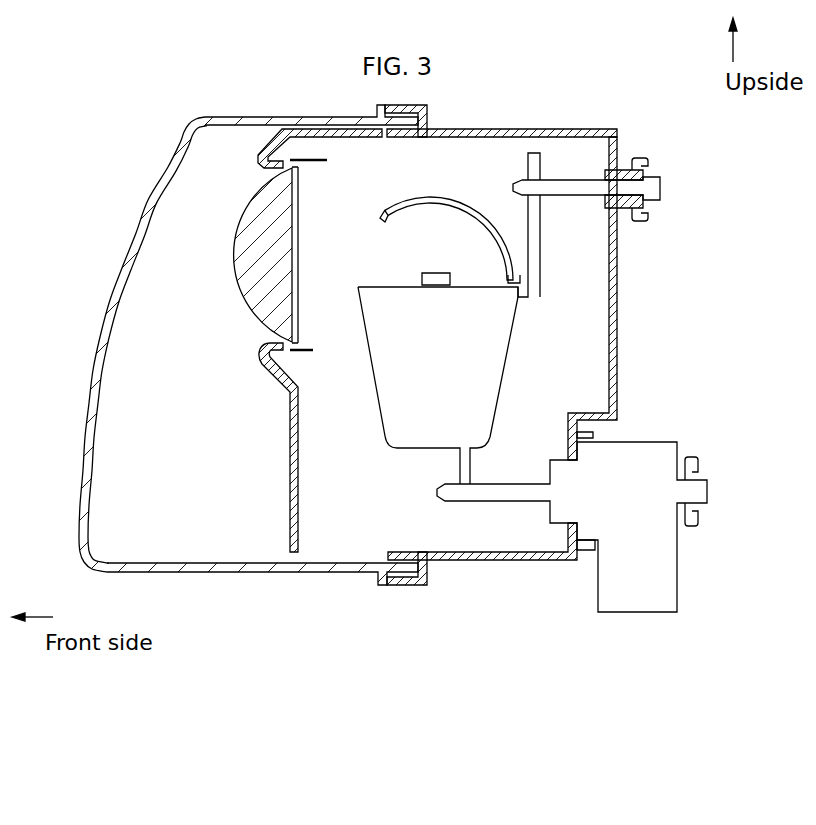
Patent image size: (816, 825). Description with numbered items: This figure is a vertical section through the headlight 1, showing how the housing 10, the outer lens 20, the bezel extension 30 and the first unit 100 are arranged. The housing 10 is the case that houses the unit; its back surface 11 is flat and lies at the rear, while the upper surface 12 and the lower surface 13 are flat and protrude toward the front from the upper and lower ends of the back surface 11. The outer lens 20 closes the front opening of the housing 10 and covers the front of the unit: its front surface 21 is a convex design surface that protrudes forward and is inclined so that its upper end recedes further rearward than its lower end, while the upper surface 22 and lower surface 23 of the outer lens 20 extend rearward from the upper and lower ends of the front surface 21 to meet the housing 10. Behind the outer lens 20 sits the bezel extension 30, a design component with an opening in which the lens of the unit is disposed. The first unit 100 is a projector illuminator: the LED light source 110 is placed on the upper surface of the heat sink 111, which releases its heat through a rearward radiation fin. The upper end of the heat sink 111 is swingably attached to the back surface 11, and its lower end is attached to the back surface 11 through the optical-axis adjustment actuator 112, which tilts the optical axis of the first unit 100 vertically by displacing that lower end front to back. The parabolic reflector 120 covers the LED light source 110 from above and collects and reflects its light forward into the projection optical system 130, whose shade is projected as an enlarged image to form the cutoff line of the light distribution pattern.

The headlight 1 is at (115, 118).
The housing 10 is at (612, 118).
The back surface 11 is at (615, 383).
The upper surface 12 is at (552, 130).
The lower surface 13 is at (538, 557).
The outer lens 20 is at (163, 127).
The front surface 21 is at (153, 202).
The upper surface 22 is at (273, 117).
The lower surface 23 is at (225, 571).
The bezel extension 30 is at (265, 358).
The first unit 100 is at (217, 220).
The LED light source 110 is at (450, 279).
The heat sink 111 is at (507, 360).
The optical-axis adjustment actuator 112 is at (677, 590).
The reflector 120 is at (458, 202).
The projection optical system 130 is at (238, 237).